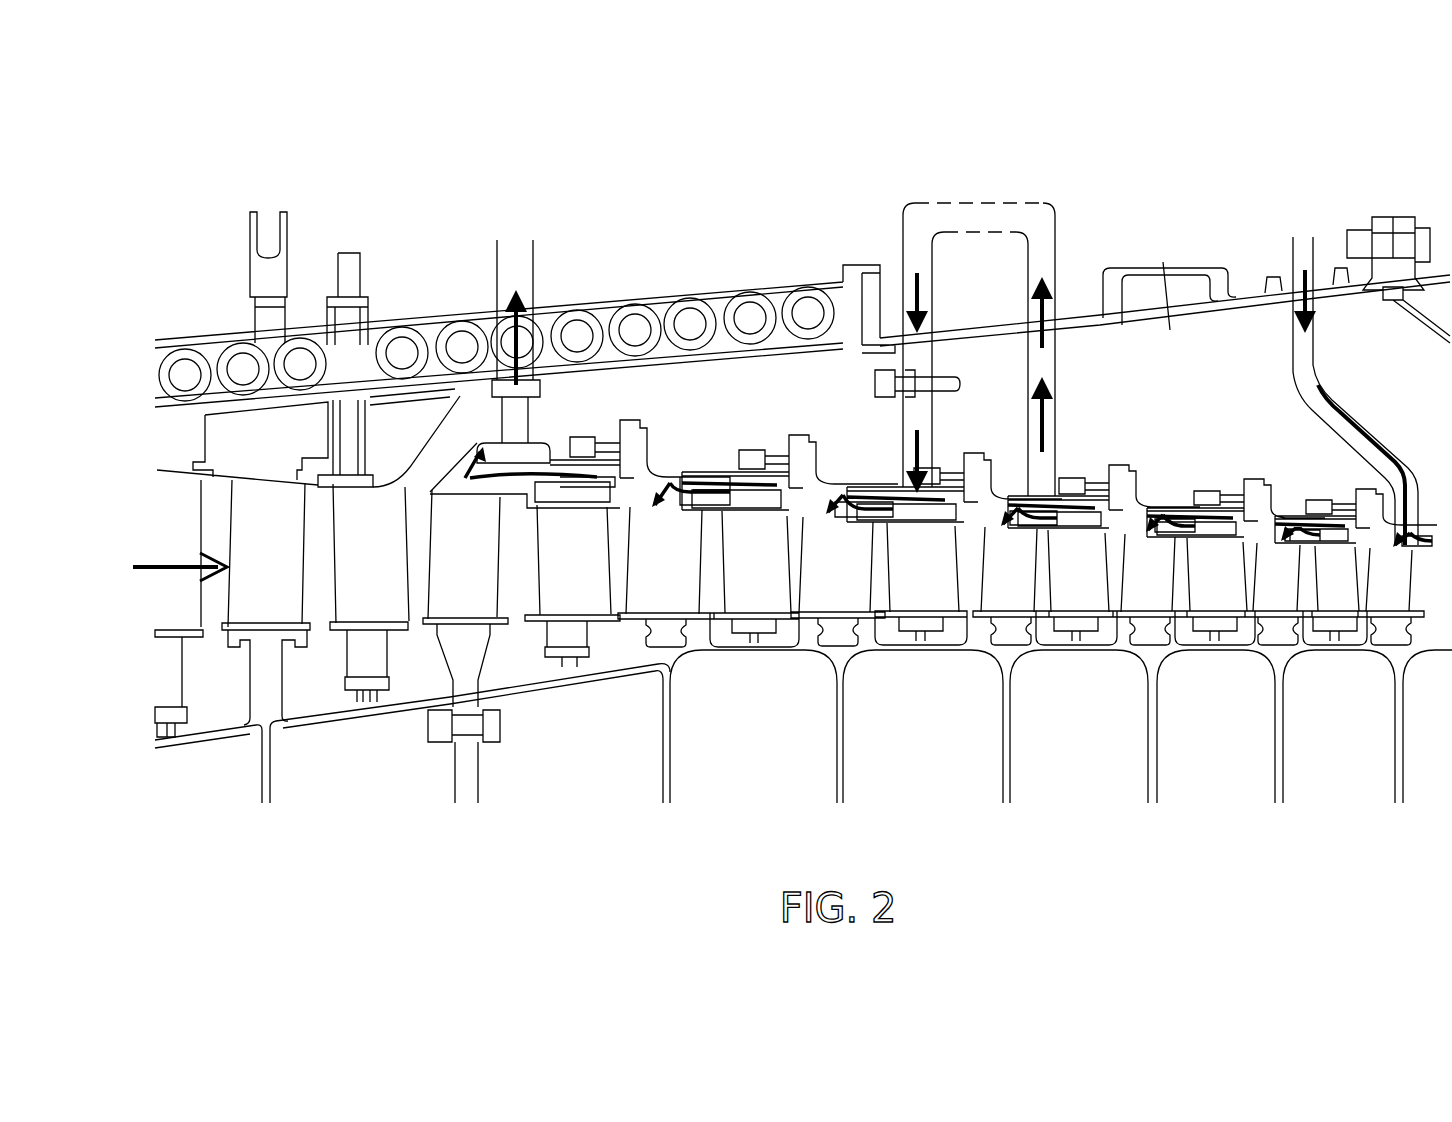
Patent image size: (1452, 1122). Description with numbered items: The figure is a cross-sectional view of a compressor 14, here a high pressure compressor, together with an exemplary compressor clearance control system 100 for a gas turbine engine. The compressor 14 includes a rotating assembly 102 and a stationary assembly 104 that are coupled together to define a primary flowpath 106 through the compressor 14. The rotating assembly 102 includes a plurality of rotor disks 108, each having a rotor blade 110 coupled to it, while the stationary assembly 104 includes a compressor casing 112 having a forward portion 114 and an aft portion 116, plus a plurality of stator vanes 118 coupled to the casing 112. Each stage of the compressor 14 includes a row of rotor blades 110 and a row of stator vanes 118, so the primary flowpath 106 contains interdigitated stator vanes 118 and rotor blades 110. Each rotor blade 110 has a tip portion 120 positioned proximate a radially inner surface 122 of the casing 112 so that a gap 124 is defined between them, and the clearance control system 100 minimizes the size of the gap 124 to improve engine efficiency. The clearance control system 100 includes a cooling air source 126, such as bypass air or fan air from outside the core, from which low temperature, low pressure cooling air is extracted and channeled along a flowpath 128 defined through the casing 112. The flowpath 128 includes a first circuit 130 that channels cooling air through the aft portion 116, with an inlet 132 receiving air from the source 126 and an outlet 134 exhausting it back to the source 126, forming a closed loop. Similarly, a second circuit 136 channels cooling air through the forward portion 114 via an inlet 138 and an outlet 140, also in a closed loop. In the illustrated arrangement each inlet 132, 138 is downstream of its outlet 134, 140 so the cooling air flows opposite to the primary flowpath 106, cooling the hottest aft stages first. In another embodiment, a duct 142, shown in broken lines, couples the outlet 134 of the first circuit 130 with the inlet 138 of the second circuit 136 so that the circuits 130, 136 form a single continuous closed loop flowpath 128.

The compressor clearance control system 100 is at (1333, 185).
The compressor 14 is at (378, 200).
The rotating assembly 102 is at (218, 803).
The stationary assembly 104 is at (205, 292).
The primary flowpath 106 is at (180, 563).
The rotor disks 108 is at (470, 783).
The rotor blade 110 is at (452, 599).
The compressor casing 112 is at (1170, 262).
The forward portion 114 is at (470, 430).
The aft portion 116 is at (1152, 463).
The stator vanes 118 is at (554, 590).
The tip portion 120 is at (430, 500).
The radially inner surface 122 is at (497, 520).
The gap 124 is at (408, 493).
The cooling air source 126 is at (934, 173).
The flowpath 128 is at (1360, 432).
The first circuit 130 is at (1280, 388).
The inlet 132 is at (1302, 245).
The outlet 134 is at (1040, 220).
The second circuit 136 is at (718, 272).
The inlet 138 is at (912, 222).
The outlet 140 is at (510, 225).
The duct 142 is at (1008, 240).